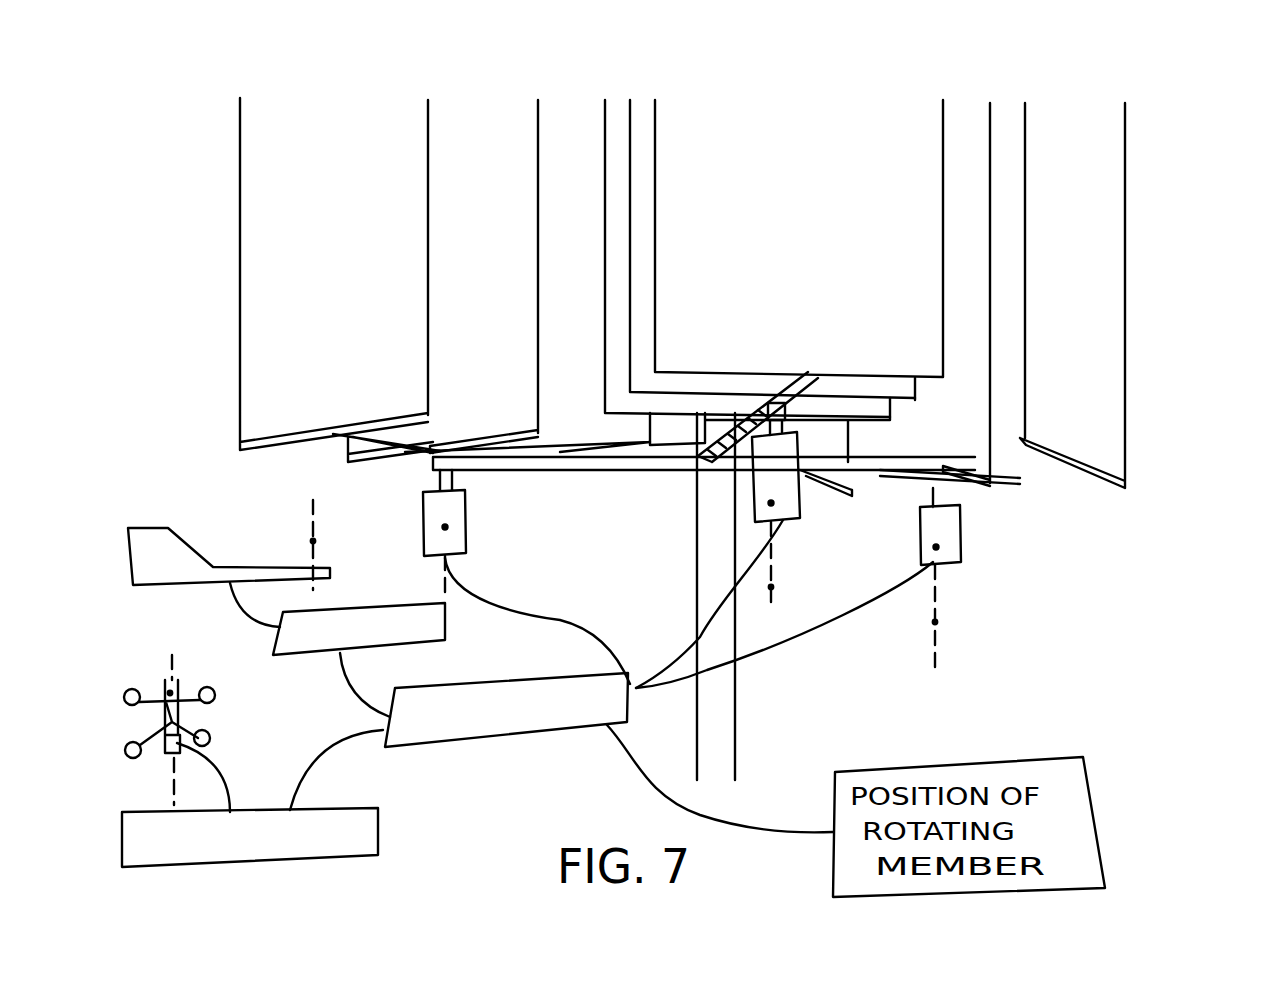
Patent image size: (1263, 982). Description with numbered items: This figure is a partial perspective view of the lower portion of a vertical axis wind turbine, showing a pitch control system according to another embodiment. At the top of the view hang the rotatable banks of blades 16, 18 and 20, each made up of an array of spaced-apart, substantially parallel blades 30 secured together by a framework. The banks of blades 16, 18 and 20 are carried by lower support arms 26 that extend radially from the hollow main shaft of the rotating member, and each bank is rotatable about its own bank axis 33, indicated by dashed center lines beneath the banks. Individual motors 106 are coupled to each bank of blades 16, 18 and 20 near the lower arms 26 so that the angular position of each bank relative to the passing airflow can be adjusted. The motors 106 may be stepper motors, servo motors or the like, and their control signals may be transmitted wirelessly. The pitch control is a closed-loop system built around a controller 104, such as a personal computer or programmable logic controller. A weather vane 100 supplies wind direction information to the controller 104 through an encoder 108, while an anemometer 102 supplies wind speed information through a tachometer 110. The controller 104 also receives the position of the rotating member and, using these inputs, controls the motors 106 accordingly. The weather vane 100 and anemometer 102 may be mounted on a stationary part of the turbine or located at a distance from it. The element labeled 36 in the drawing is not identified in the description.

The bank of blades 16 is at (1180, 325).
The bank of blades 18 is at (786, 62).
The bank of blades 20 is at (205, 216).
The lower support arms 26 is at (660, 463).
The blades 30 is at (334, 252).
The bank axis 33 is at (440, 582).
The shaft 36 is at (717, 710).
The weather vane 100 is at (173, 567).
The anemometer 102 is at (160, 693).
The controller 104 is at (498, 738).
The motors 106 is at (465, 518).
The encoder 108 is at (316, 650).
The tachometer 110 is at (377, 857).